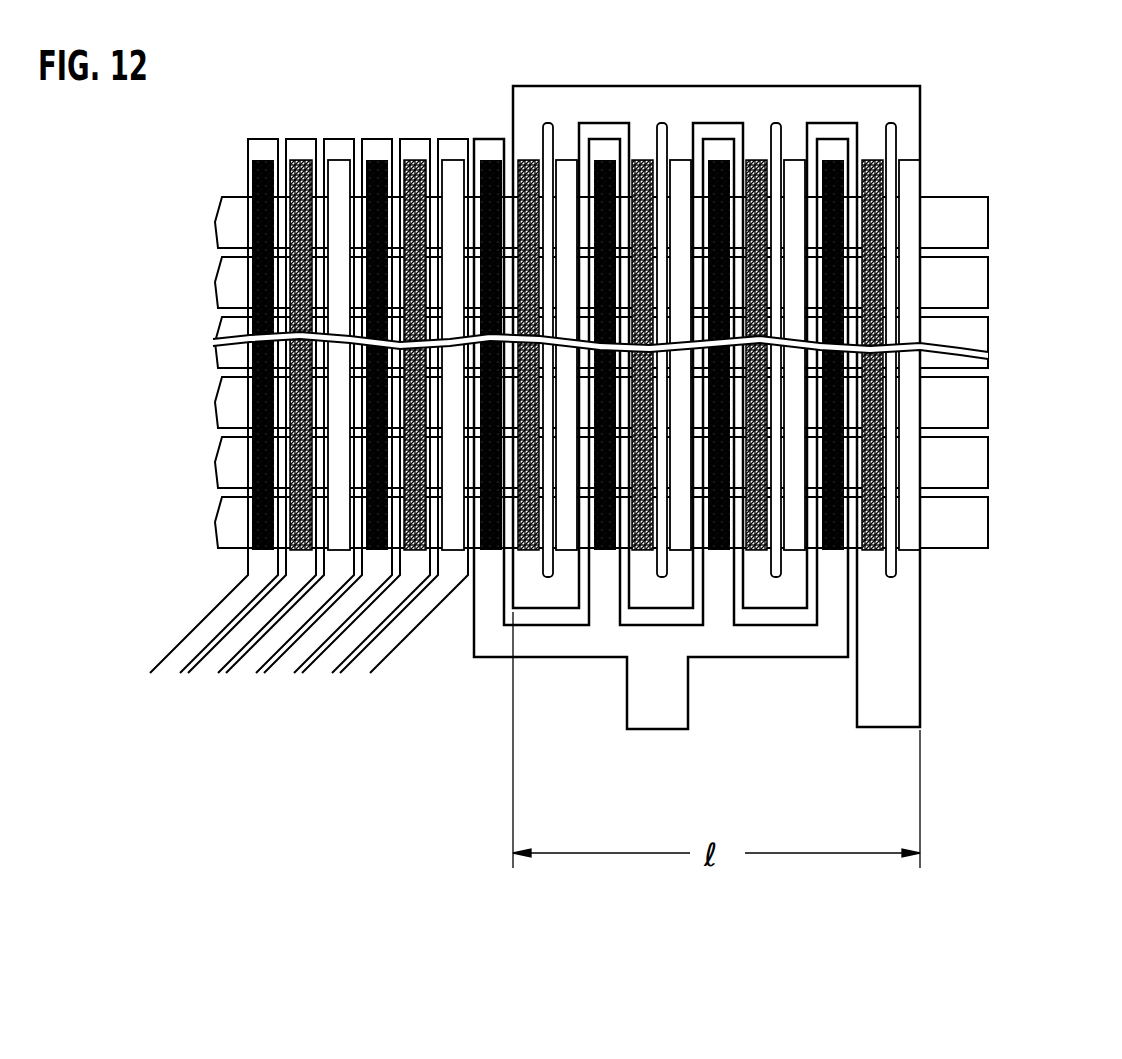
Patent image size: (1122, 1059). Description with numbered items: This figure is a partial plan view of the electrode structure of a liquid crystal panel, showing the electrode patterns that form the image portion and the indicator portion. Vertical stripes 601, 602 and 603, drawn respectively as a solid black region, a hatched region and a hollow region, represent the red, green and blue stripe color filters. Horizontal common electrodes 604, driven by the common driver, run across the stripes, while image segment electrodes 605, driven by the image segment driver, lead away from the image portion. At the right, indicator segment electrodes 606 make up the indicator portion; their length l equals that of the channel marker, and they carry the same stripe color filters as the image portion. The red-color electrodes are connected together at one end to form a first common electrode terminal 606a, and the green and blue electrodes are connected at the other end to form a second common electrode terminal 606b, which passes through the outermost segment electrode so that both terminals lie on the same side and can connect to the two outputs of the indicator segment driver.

The stripe color filter (R) 601 is at (263, 159).
The stripe color filter (G) 602 is at (301, 159).
The stripe color filter (B) 603 is at (341, 159).
The common electrodes 604 is at (1002, 548).
The image segment electrodes 605 is at (453, 663).
The indicator segment electrodes 606 is at (746, 442).
The first common electrode terminal 606a is at (688, 702).
The second common electrode terminal 606b is at (769, 408).